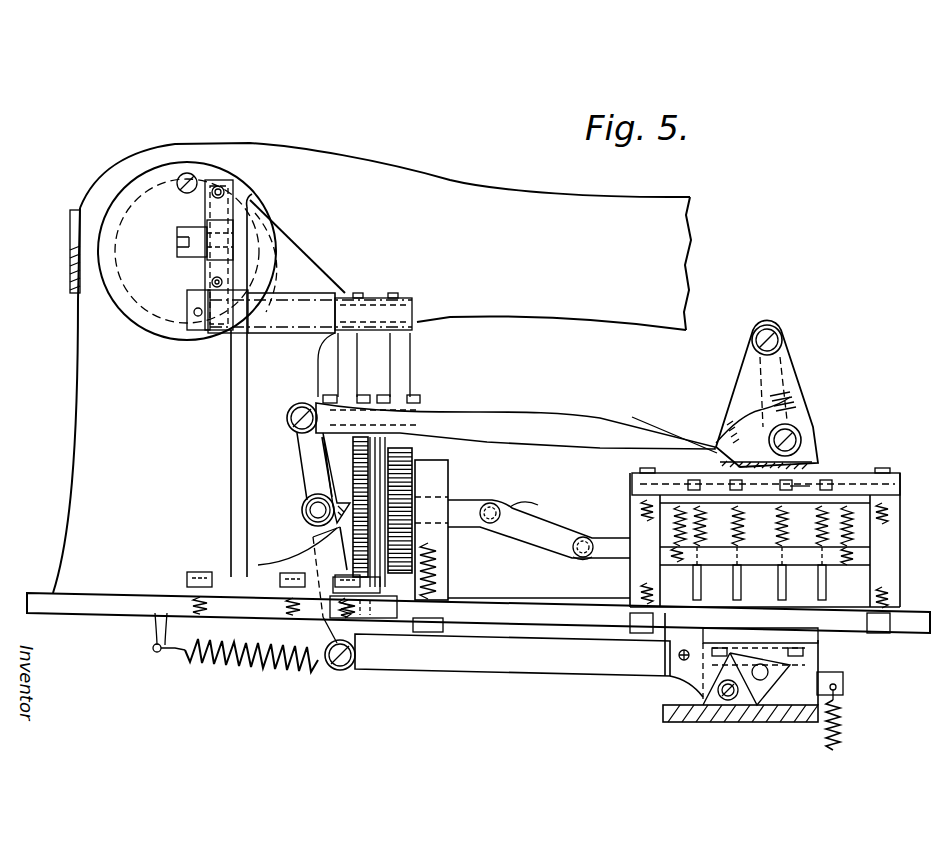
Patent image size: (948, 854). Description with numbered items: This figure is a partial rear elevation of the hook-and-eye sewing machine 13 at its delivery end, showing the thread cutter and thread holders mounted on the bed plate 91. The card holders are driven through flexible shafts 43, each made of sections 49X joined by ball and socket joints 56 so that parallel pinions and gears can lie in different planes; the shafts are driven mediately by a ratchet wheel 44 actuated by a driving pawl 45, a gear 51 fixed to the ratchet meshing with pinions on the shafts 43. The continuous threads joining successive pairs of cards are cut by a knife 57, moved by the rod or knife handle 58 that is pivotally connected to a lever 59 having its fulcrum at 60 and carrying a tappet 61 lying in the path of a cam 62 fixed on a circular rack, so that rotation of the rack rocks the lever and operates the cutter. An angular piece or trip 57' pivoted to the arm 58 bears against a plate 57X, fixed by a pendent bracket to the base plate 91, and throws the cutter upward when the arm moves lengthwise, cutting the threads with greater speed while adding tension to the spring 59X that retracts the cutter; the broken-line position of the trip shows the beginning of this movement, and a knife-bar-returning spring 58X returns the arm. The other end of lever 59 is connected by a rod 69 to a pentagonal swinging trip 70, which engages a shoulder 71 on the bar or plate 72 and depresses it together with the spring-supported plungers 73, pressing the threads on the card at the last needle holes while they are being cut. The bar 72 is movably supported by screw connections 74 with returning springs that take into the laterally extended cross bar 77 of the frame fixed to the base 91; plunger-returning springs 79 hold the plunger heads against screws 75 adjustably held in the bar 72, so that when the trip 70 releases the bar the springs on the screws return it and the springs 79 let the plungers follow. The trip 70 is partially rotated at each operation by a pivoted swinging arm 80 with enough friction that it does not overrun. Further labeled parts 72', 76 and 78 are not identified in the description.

The sewing machine 13 is at (372, 368).
The shafts 43 is at (539, 535).
The ratchet wheel 44 is at (412, 452).
The driving pawl 45 is at (357, 512).
The shaft sections 49X is at (544, 519).
The gear 51 is at (370, 597).
The ball and socket joints 56 is at (577, 530).
The knife 57 is at (766, 667).
The angular piece or trip 57' is at (746, 703).
The plate 57X is at (745, 723).
The knife handle 58 is at (497, 655).
The knife-bar-returning spring 58X is at (235, 653).
The lever 59 is at (313, 538).
The spring 59X is at (852, 720).
The fulcrum 60 is at (306, 510).
The tappet 61 is at (346, 488).
The cam 62 is at (296, 551).
The rod 69 is at (501, 422).
The swinging angular piece or trip 70 is at (800, 427).
The shoulder 71 is at (717, 423).
The bar 72 is at (783, 481).
The bar edge 72' is at (661, 425).
The plungers 73 is at (818, 587).
The screw connections 74 is at (660, 513).
The screws 75 is at (792, 486).
The pivot 76 is at (585, 572).
The cross bar 77 is at (765, 557).
The housing 78 is at (797, 544).
The plunger-returning springs 79 is at (762, 535).
The swinging arm 80 is at (782, 398).
The bed plate 91 is at (131, 570).